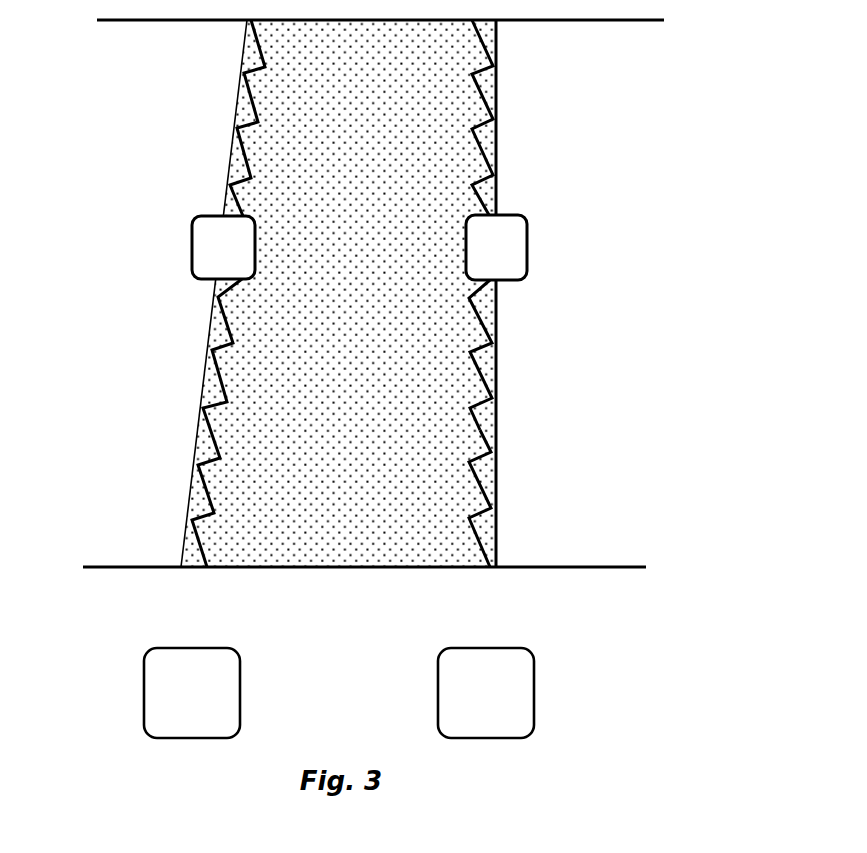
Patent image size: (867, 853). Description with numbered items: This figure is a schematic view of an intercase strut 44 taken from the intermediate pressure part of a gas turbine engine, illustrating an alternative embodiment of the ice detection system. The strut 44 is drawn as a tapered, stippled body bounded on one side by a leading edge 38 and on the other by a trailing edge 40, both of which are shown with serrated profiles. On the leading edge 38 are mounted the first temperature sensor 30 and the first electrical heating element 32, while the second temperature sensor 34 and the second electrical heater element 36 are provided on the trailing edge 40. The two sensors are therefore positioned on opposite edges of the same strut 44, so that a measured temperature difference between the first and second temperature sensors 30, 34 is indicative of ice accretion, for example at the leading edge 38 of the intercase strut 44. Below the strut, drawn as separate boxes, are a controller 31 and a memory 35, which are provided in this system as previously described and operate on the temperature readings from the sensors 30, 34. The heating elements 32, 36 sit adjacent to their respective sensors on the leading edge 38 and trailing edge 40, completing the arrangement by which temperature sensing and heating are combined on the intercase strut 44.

The first temperature sensor 30 is at (191, 234).
The controller 31 is at (178, 706).
The first electrical heating element 32 is at (188, 423).
The second temperature sensor 34 is at (526, 263).
The memory 35 is at (472, 706).
The second electrical heater element 36 is at (518, 225).
The leading edge 38 is at (208, 118).
The trailing edge 40 is at (510, 498).
The intercase strut 44 is at (349, 284).